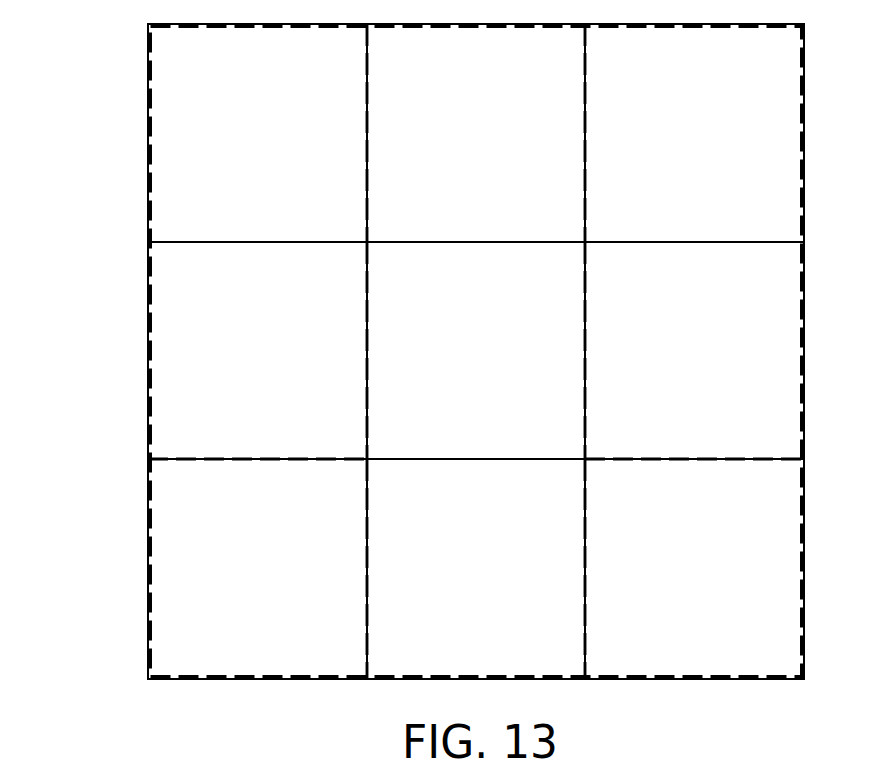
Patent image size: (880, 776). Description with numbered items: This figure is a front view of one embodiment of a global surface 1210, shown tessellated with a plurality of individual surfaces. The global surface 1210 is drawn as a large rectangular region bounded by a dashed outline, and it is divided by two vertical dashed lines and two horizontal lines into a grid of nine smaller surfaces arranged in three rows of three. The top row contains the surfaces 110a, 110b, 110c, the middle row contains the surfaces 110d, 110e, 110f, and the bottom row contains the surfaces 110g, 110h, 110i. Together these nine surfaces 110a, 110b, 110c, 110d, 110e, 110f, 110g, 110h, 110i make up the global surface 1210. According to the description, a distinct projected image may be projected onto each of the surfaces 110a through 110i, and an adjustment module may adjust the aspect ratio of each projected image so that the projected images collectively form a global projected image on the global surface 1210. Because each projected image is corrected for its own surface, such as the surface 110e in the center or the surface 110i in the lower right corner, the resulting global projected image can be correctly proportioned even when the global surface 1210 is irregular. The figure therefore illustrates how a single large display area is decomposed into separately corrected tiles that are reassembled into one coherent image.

The global surface 1210 is at (148, 52).
The surface 110a is at (257, 133).
The surface 110b is at (476, 133).
The surface 110c is at (694, 133).
The surface 110d is at (257, 350).
The surface 110e is at (476, 350).
The surface 110f is at (694, 350).
The surface 110g is at (257, 569).
The surface 110h is at (476, 569).
The surface 110i is at (694, 569).